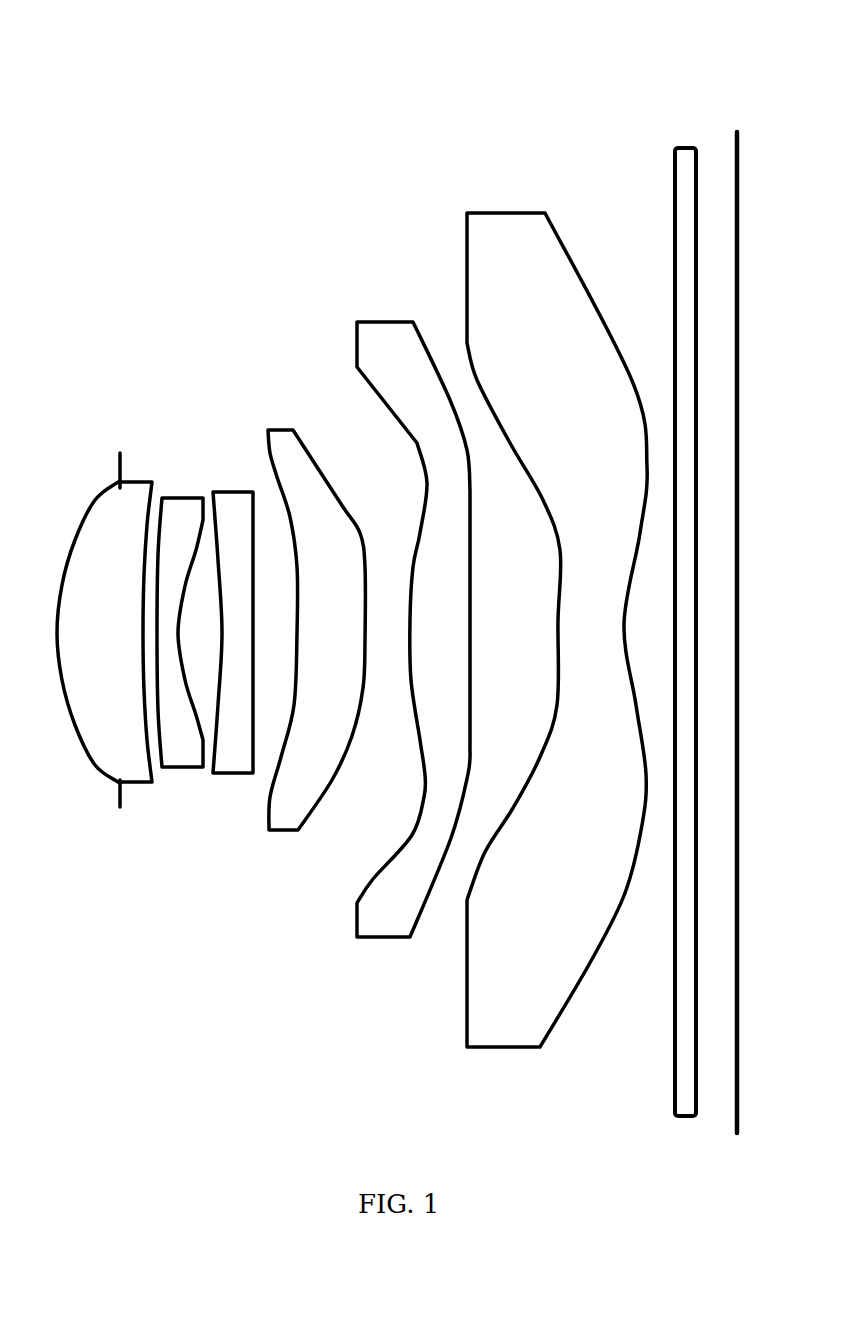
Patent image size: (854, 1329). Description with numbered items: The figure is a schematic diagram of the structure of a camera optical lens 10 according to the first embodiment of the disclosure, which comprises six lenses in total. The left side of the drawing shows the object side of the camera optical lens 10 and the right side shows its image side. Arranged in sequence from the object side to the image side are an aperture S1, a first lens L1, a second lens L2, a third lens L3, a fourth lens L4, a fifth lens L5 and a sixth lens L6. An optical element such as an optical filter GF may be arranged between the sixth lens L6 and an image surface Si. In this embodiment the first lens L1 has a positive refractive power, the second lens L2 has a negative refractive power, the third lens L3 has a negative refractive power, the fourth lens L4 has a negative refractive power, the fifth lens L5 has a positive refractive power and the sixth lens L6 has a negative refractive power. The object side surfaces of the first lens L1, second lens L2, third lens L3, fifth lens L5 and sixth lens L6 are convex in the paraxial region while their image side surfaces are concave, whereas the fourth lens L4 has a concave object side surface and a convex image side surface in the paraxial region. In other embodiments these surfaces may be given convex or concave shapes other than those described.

The camera optical lens 10 is at (415, 38).
The aperture S1 is at (117, 619).
The first lens L1 is at (104, 617).
The second lens L2 is at (180, 618).
The third lens L3 is at (233, 619).
The fourth lens L4 is at (316, 617).
The fifth lens L5 is at (413, 616).
The sixth lens L6 is at (557, 618).
The optical filter GF is at (684, 616).
The image surface Si is at (733, 616).